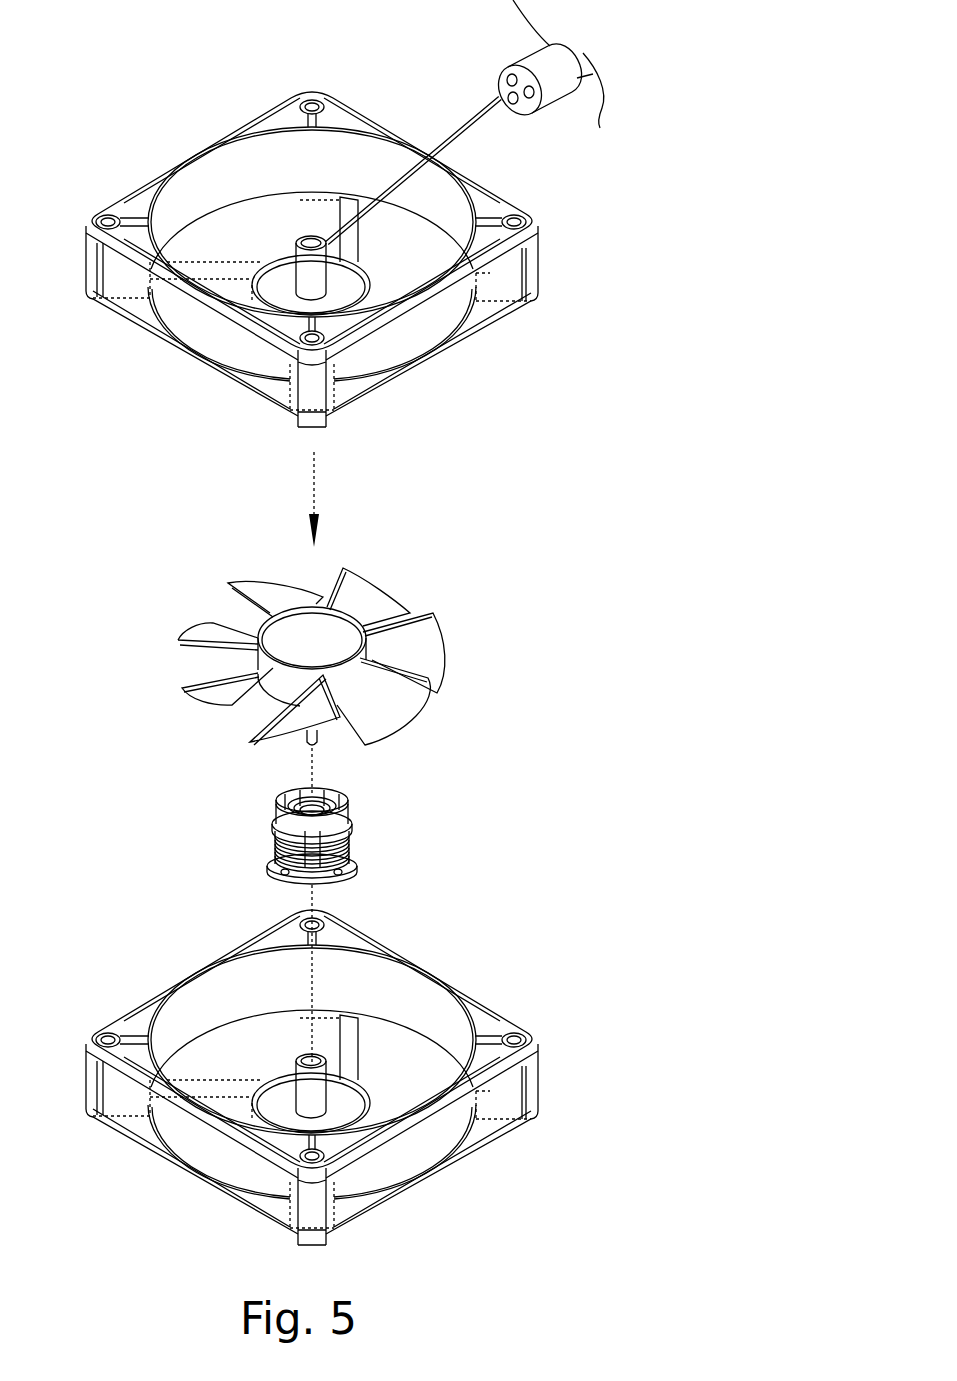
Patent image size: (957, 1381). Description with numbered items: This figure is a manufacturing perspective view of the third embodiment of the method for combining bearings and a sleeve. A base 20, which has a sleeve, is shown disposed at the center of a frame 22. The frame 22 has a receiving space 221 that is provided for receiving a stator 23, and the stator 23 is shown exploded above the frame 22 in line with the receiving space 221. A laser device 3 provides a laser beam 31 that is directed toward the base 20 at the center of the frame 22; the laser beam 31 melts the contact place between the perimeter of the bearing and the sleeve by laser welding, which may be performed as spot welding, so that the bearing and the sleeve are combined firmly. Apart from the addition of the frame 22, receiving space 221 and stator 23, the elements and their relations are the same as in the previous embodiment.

The laser device 3 is at (517, 62).
The laser beam 31 is at (470, 127).
The base 20 is at (370, 293).
The frame 22 is at (532, 267).
The receiving space 221 is at (184, 170).
The stator 23 is at (360, 840).